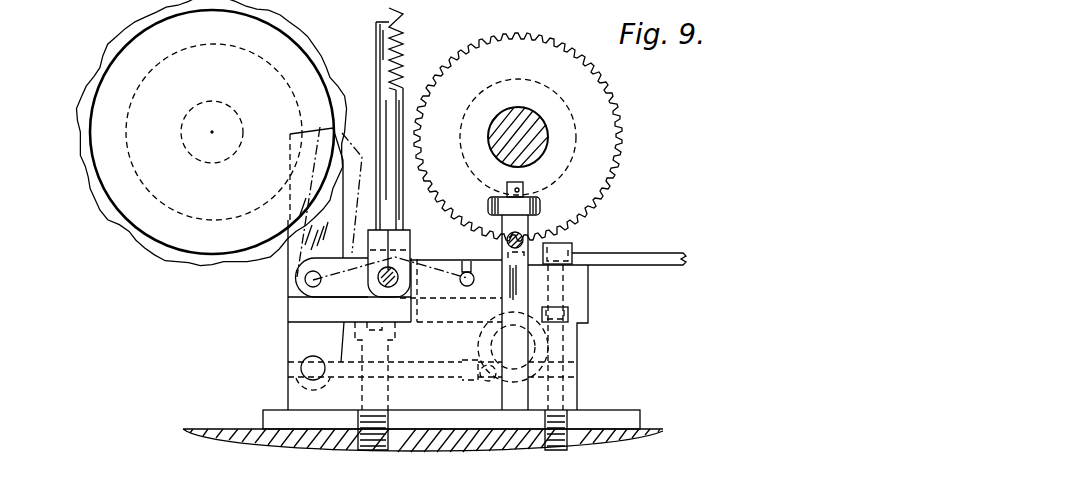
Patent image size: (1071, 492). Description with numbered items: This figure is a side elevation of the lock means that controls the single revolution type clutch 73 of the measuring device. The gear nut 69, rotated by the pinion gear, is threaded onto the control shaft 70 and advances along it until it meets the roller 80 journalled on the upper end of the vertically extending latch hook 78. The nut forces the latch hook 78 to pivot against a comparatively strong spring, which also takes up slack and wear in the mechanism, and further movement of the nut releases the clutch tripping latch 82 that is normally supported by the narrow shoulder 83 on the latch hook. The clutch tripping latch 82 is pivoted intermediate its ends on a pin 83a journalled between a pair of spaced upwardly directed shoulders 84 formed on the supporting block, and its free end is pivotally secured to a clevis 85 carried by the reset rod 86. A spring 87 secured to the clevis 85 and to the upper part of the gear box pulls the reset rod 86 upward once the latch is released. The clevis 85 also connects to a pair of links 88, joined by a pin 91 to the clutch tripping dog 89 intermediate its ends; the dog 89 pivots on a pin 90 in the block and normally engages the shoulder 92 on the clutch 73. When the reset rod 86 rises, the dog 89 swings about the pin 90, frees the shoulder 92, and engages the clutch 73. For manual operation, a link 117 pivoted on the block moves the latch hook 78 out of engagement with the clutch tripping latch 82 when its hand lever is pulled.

The single revolution type clutch 73 is at (92, 73).
The shoulder 92 is at (342, 134).
The clutch tripping dog 89 is at (289, 308).
The pin 91 is at (305, 281).
The links 88 is at (346, 309).
The clevis 85 is at (411, 240).
The reset rod 86 is at (376, 190).
The spring 87 is at (401, 9).
The clutch tripping latch 82 is at (450, 259).
The shoulders 84 is at (424, 281).
The pin 83a is at (461, 286).
The latch hook 78 is at (531, 247).
The roller 80 is at (541, 205).
The gear nut 69 is at (611, 109).
The control shaft 70 is at (538, 113).
The link 117 is at (624, 254).
The shoulder 83 is at (589, 298).
The pin 90 is at (309, 381).